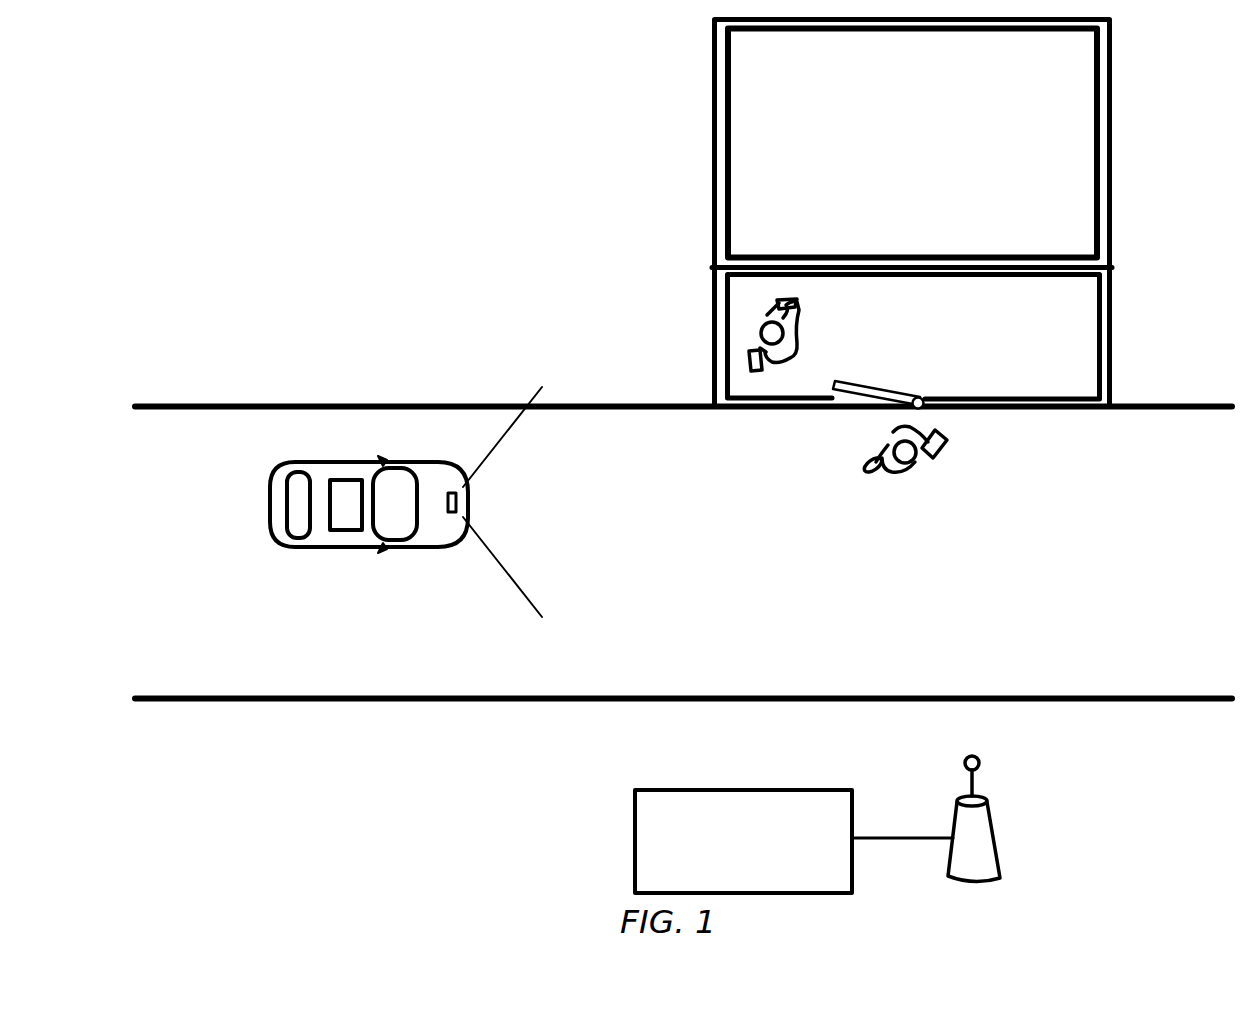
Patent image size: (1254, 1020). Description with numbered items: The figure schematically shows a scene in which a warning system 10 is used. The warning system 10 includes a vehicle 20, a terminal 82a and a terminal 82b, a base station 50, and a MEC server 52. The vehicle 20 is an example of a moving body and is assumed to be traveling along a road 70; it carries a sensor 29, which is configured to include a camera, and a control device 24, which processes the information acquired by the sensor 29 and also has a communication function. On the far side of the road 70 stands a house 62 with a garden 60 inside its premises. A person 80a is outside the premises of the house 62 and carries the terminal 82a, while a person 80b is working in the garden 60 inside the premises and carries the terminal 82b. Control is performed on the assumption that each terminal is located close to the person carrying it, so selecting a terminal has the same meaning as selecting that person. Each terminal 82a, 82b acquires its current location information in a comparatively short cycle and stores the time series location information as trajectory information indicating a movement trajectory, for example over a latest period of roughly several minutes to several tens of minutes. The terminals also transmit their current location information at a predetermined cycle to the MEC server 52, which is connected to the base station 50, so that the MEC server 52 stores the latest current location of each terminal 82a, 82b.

The warning system 10 is at (146, 110).
The vehicle 20 is at (272, 502).
The control device 24 is at (345, 530).
The sensor 29 is at (457, 513).
The base station 50 is at (957, 786).
The MEC server 52 is at (772, 790).
The garden 60 is at (914, 342).
The house 62 is at (912, 213).
The road 70 is at (682, 553).
The person 80a is at (870, 476).
The person 80b is at (762, 328).
The terminal 82a is at (947, 447).
The terminal 82b is at (748, 356).